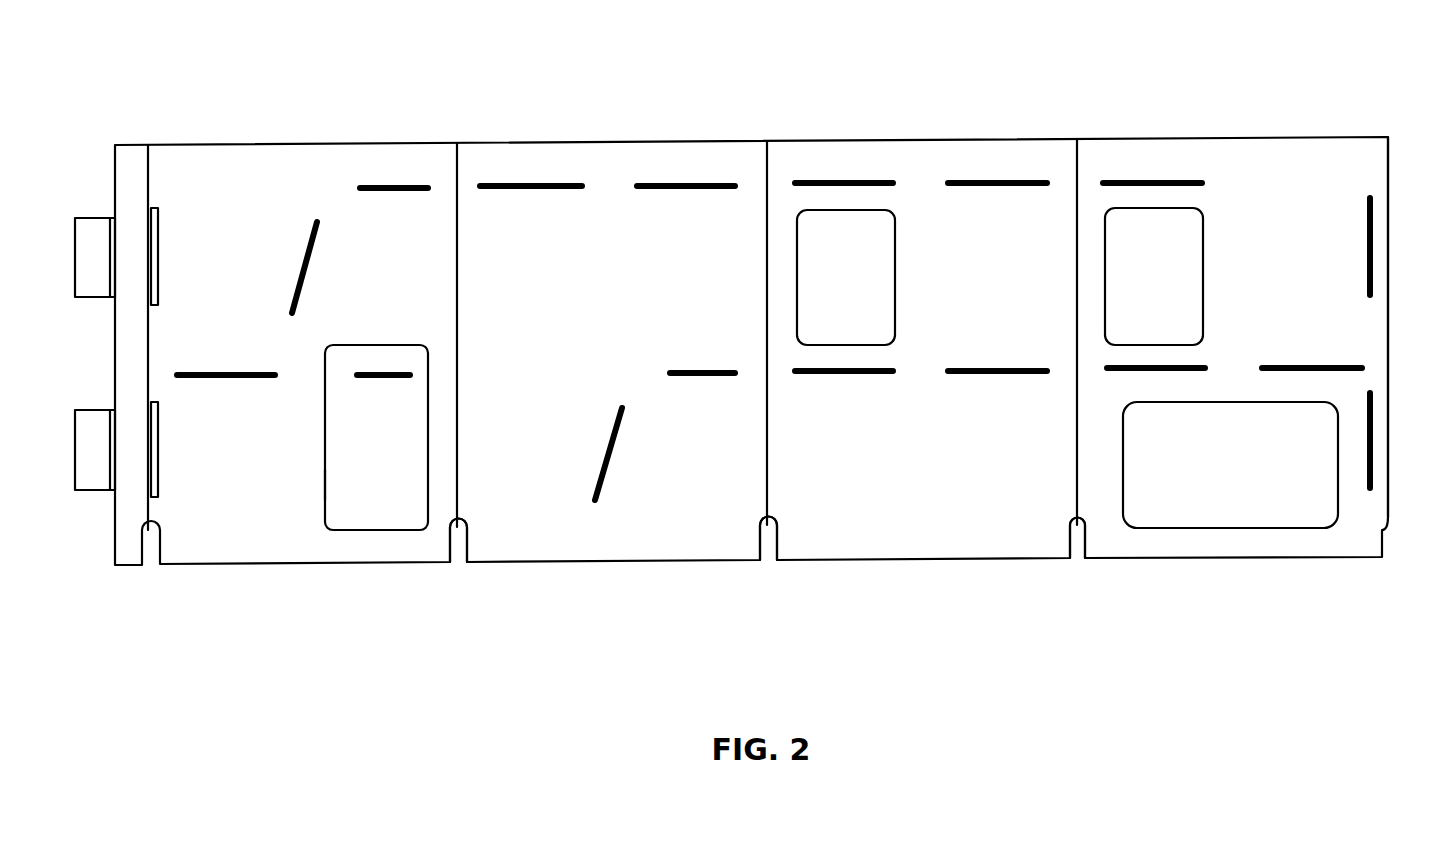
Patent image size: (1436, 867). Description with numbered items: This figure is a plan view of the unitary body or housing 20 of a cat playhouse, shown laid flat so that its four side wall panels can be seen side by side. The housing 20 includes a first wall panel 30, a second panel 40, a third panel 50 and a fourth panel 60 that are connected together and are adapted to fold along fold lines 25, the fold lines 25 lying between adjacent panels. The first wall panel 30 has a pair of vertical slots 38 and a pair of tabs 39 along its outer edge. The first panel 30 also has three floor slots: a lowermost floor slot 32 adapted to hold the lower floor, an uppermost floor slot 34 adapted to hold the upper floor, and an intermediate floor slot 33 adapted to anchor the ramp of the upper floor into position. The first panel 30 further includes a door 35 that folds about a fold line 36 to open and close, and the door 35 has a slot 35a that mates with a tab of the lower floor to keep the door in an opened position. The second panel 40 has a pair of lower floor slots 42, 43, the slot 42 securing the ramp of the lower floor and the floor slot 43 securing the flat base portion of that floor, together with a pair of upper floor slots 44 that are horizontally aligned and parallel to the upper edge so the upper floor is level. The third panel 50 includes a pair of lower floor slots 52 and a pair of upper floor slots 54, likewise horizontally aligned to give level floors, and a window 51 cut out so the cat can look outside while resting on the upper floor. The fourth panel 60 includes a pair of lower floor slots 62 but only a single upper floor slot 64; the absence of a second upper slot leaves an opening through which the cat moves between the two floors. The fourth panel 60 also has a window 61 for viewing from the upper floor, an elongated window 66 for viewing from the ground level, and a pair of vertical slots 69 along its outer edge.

The housing 20 is at (662, 120).
The fold lines 25 is at (458, 497).
The first wall panel 30 is at (252, 165).
The lowermost floor slot 32 is at (227, 380).
The intermediate floor slot 33 is at (318, 223).
The uppermost floor slot 34 is at (395, 185).
The door 35 is at (370, 505).
The slot 35a is at (398, 375).
The fold line 36 is at (325, 480).
The vertical slots 38 is at (153, 290).
The tabs 39 is at (92, 283).
The second panel 40 is at (713, 152).
The lower floor slot 42 is at (610, 450).
The lower floor slot 43 is at (703, 378).
The upper floor slots 44 is at (535, 186).
The third panel 50 is at (1033, 150).
The window 51 is at (812, 220).
The lower floor slots 52 is at (845, 375).
The upper floor slots 54 is at (837, 183).
The fourth panel 60 is at (1292, 162).
The window 61 is at (1168, 218).
The lower floor slots 62 is at (1160, 372).
The upper floor slot 64 is at (1153, 183).
The elongated window 66 is at (1157, 505).
The vertical slots 69 is at (1372, 287).